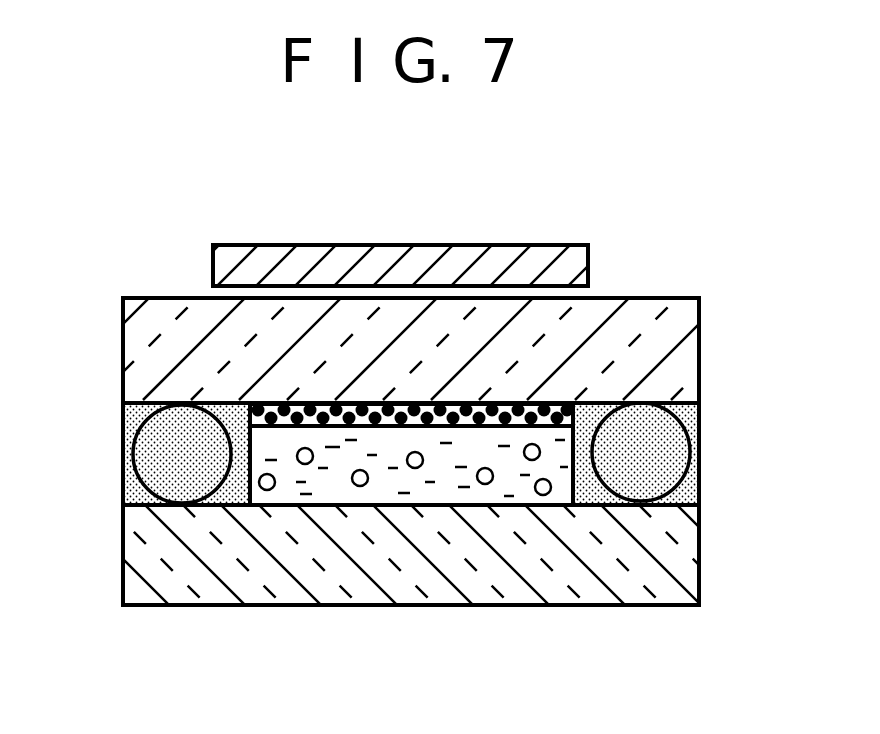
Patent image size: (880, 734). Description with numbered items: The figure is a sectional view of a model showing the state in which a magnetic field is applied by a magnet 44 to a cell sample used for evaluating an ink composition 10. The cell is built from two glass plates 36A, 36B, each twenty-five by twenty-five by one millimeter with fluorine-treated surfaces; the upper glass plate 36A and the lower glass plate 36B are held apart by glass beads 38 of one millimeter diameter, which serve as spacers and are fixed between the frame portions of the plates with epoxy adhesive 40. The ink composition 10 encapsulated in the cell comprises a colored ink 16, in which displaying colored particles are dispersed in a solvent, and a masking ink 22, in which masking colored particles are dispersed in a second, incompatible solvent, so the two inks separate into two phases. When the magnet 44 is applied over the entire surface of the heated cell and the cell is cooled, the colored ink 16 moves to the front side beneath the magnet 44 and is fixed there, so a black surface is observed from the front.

The ink composition 10 is at (775, 322).
The colored ink 16 is at (545, 403).
The masking ink 22 is at (510, 485).
The glass plate 36A is at (218, 360).
The glass plate 36B is at (233, 565).
The glass bead 38 is at (165, 452).
The epoxy adhesive 40 is at (123, 420).
The magnet 44 is at (254, 262).